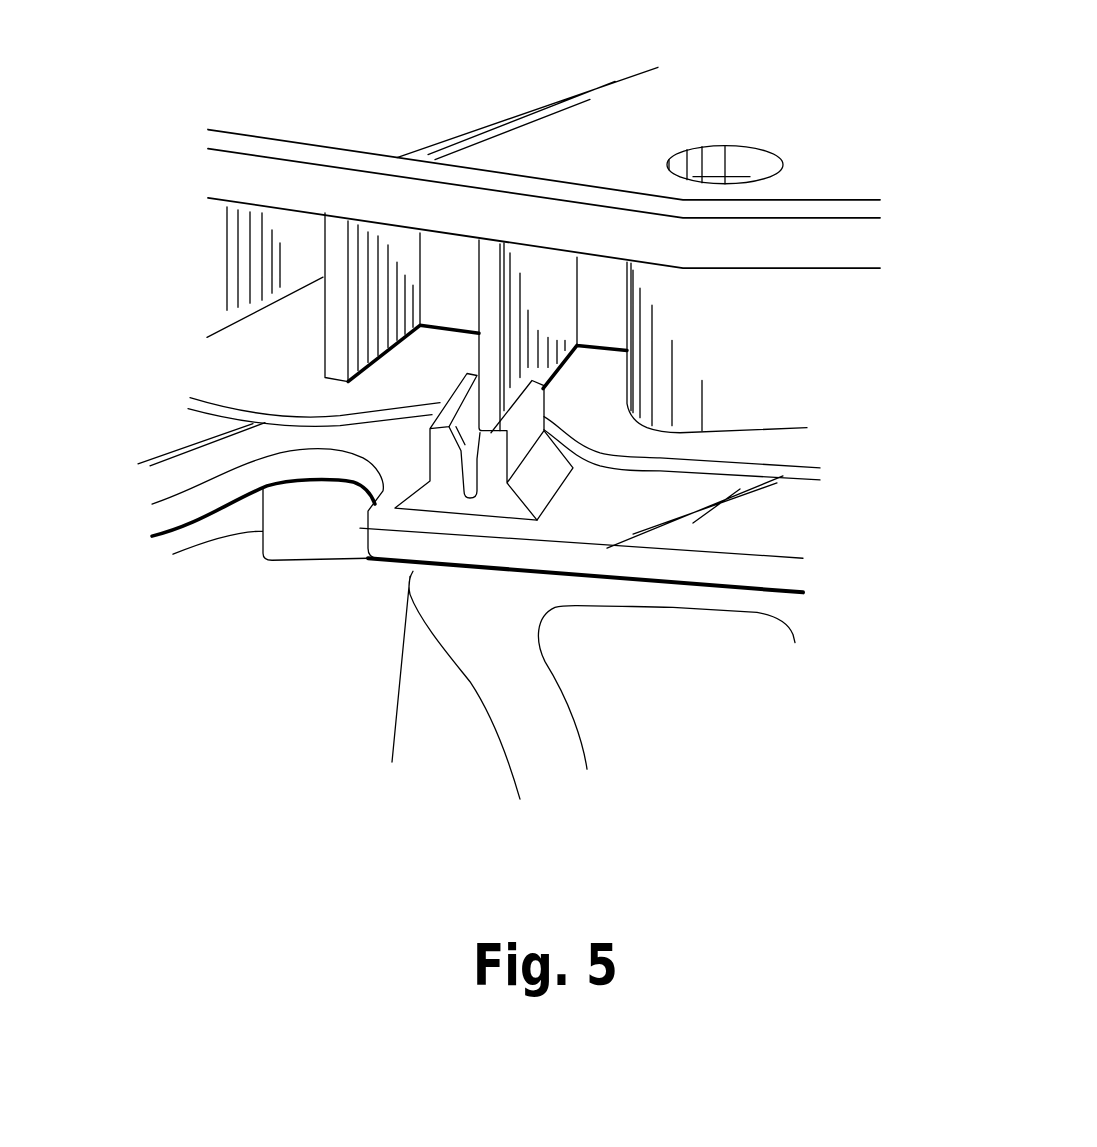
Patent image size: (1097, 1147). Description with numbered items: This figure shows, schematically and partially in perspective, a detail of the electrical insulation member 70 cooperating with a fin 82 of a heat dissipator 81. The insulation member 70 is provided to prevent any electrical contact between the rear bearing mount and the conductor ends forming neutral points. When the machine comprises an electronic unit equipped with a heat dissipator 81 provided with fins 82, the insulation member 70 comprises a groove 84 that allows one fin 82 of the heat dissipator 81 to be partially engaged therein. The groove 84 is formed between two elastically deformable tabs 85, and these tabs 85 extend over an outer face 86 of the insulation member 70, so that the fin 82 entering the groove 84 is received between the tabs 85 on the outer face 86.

The electrical insulation member 70 is at (198, 475).
The heat dissipator 81 is at (327, 337).
The fin 82 is at (552, 303).
The groove 84 is at (440, 452).
The elastically deformable tabs 85 is at (462, 423).
The outer face 86 is at (763, 527).